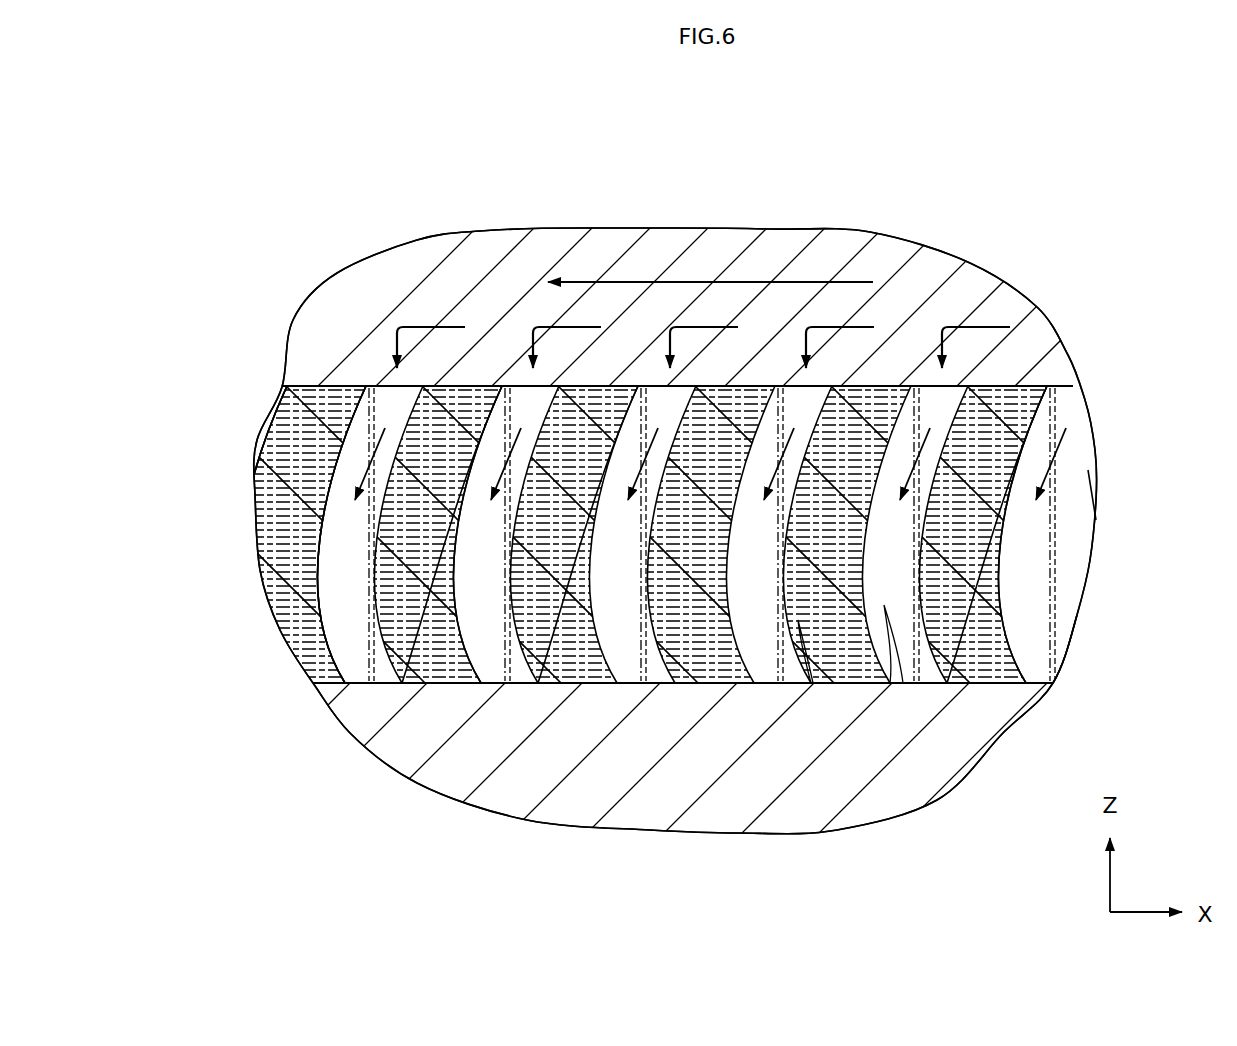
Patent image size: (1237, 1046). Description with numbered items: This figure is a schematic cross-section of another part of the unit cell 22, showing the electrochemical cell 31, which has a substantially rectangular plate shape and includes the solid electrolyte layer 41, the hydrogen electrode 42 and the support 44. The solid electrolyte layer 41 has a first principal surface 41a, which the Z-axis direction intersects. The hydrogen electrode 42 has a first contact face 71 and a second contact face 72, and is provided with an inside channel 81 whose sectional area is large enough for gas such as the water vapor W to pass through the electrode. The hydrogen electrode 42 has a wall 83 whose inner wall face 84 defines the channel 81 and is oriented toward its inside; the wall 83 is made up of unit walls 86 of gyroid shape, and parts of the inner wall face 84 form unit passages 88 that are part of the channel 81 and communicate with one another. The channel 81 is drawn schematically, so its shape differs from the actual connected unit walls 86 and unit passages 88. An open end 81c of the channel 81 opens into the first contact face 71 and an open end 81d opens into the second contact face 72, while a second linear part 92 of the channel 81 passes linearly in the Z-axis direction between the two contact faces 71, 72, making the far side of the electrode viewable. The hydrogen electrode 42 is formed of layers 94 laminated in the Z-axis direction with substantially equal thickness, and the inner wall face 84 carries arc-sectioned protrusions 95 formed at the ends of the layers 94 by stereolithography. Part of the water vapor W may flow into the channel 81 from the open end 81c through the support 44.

The heat exchanger 22 is at (233, 150).
The electrochemical cell 31 is at (1055, 332).
The solid electrolyte layer 41 is at (827, 812).
The first principal surface 41a is at (1050, 678).
The hydrogen electrode 42 is at (320, 378).
The support 44 is at (920, 265).
The first contact face 71 is at (480, 385).
The second contact face 72 is at (597, 683).
The channel 81 is at (1072, 403).
The open end 81c is at (390, 383).
The open end 81d is at (357, 683).
The wall 83 is at (282, 553).
The inner wall face 84 is at (330, 612).
The unit walls 86 is at (277, 581).
The unit passages 88 is at (327, 531).
The second linear part 92 is at (368, 628).
The layers 94 is at (1087, 483).
The protrusions 95 is at (805, 683).
The water vapor W is at (352, 493).